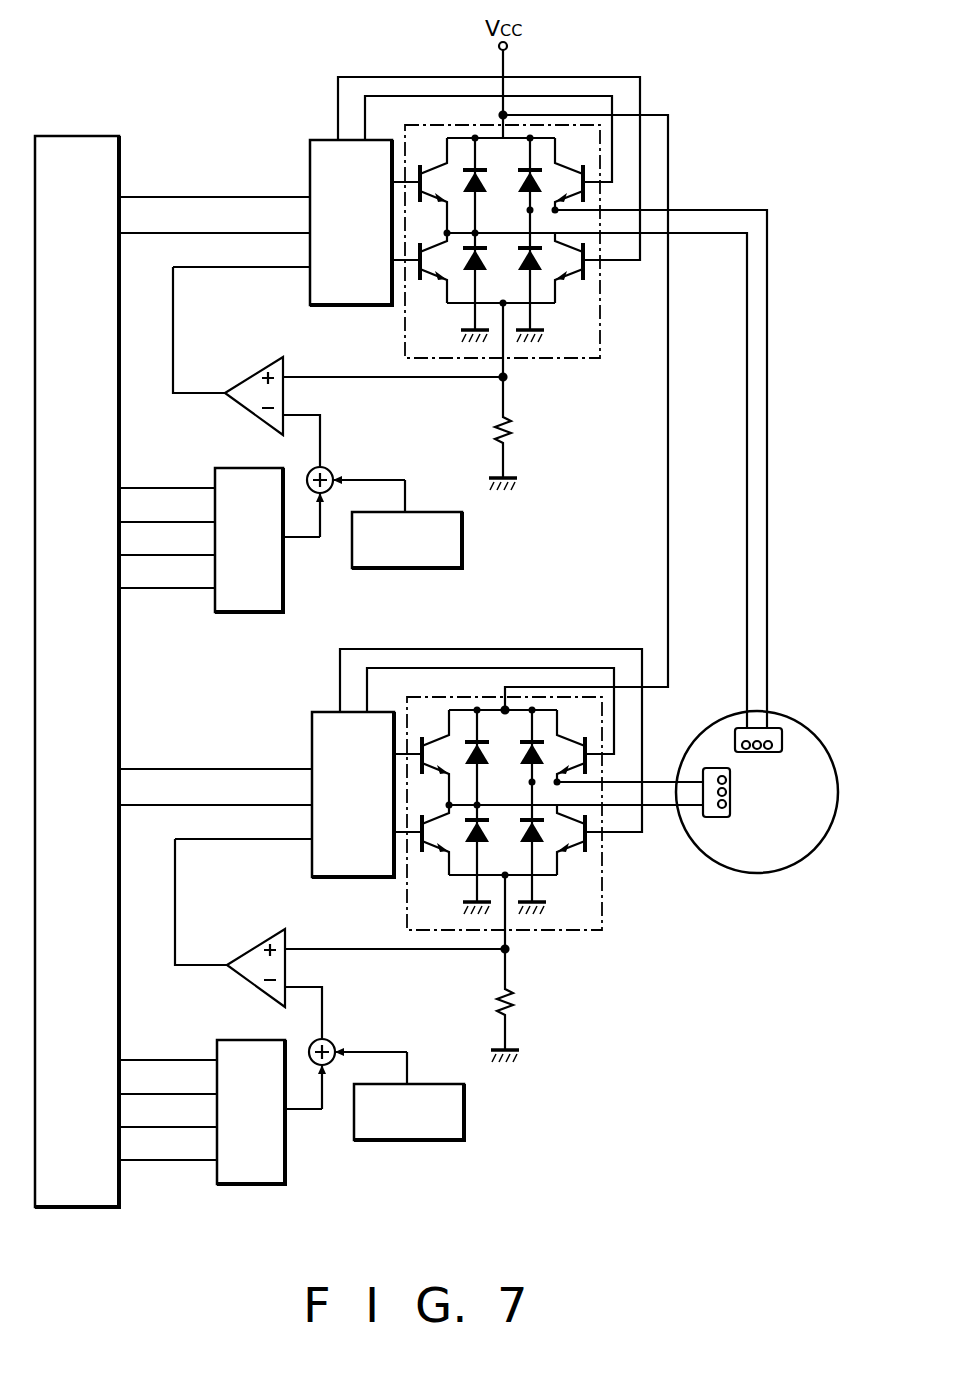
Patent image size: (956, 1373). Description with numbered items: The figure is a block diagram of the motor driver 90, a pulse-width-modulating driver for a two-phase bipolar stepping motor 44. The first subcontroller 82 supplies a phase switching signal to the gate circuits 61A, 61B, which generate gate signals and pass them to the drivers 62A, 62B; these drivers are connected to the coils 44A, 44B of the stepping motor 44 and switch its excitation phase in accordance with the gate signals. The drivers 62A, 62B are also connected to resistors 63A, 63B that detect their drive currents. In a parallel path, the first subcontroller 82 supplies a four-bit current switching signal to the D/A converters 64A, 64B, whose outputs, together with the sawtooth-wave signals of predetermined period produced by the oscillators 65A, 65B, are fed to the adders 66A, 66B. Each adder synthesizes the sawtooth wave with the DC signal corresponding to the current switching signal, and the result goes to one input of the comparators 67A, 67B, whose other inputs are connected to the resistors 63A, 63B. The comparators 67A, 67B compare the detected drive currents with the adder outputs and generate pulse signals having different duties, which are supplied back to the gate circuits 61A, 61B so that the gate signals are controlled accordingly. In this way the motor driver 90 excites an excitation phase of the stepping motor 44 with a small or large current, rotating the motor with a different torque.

The first subcontroller 82 is at (119, 160).
The motor driver 90 is at (276, 100).
The gate circuit 61A is at (310, 170).
The gate circuit 61B is at (314, 794).
The driver 62A is at (595, 358).
The driver 62B is at (509, 815).
The resistor 63A is at (512, 425).
The resistor 63B is at (539, 968).
The D/A converter 64A is at (238, 468).
The D/A converter 64B is at (242, 1095).
The oscillator 65A is at (462, 545).
The oscillator 65B is at (447, 1116).
The adder 66A is at (332, 472).
The adder 66B is at (358, 1057).
The comparator 67A is at (259, 371).
The comparator 67B is at (356, 977).
The stepping motor 44 is at (757, 819).
The coil 44A is at (762, 752).
The coil 44B is at (720, 817).